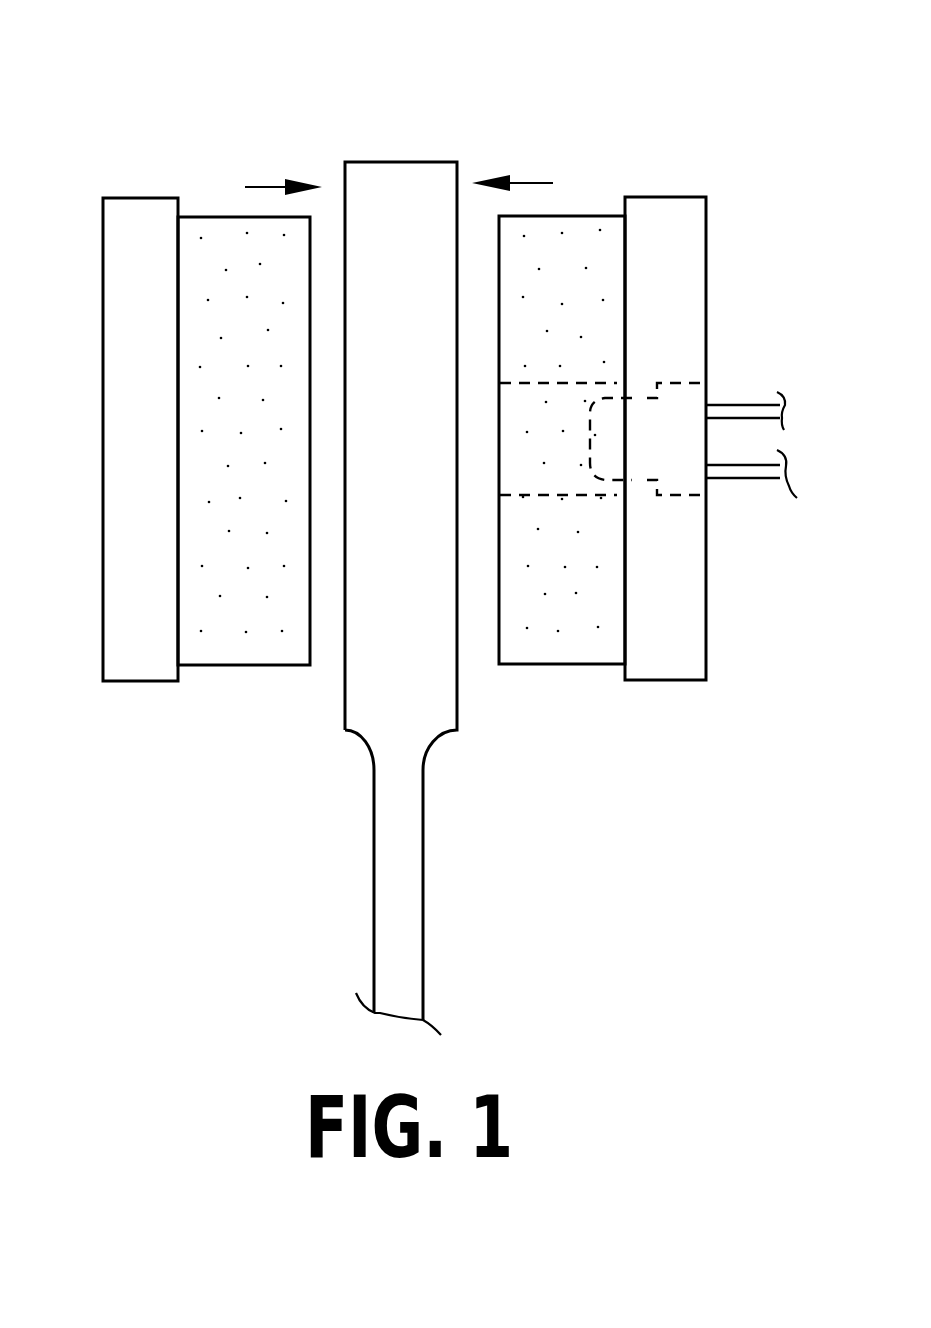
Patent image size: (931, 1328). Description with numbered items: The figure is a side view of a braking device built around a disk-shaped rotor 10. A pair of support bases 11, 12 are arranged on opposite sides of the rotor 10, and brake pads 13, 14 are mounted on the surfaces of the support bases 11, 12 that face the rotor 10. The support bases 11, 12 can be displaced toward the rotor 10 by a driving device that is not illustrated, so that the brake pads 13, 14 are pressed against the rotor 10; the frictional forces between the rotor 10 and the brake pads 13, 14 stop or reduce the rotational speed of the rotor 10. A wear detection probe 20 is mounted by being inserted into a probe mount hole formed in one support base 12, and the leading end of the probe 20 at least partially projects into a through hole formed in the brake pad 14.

The rotor 10 is at (401, 106).
The support base 11 is at (130, 228).
The support base 12 is at (671, 232).
The brake pad 13 is at (215, 250).
The brake pad 14 is at (556, 250).
The wear detection probe 20 is at (690, 403).